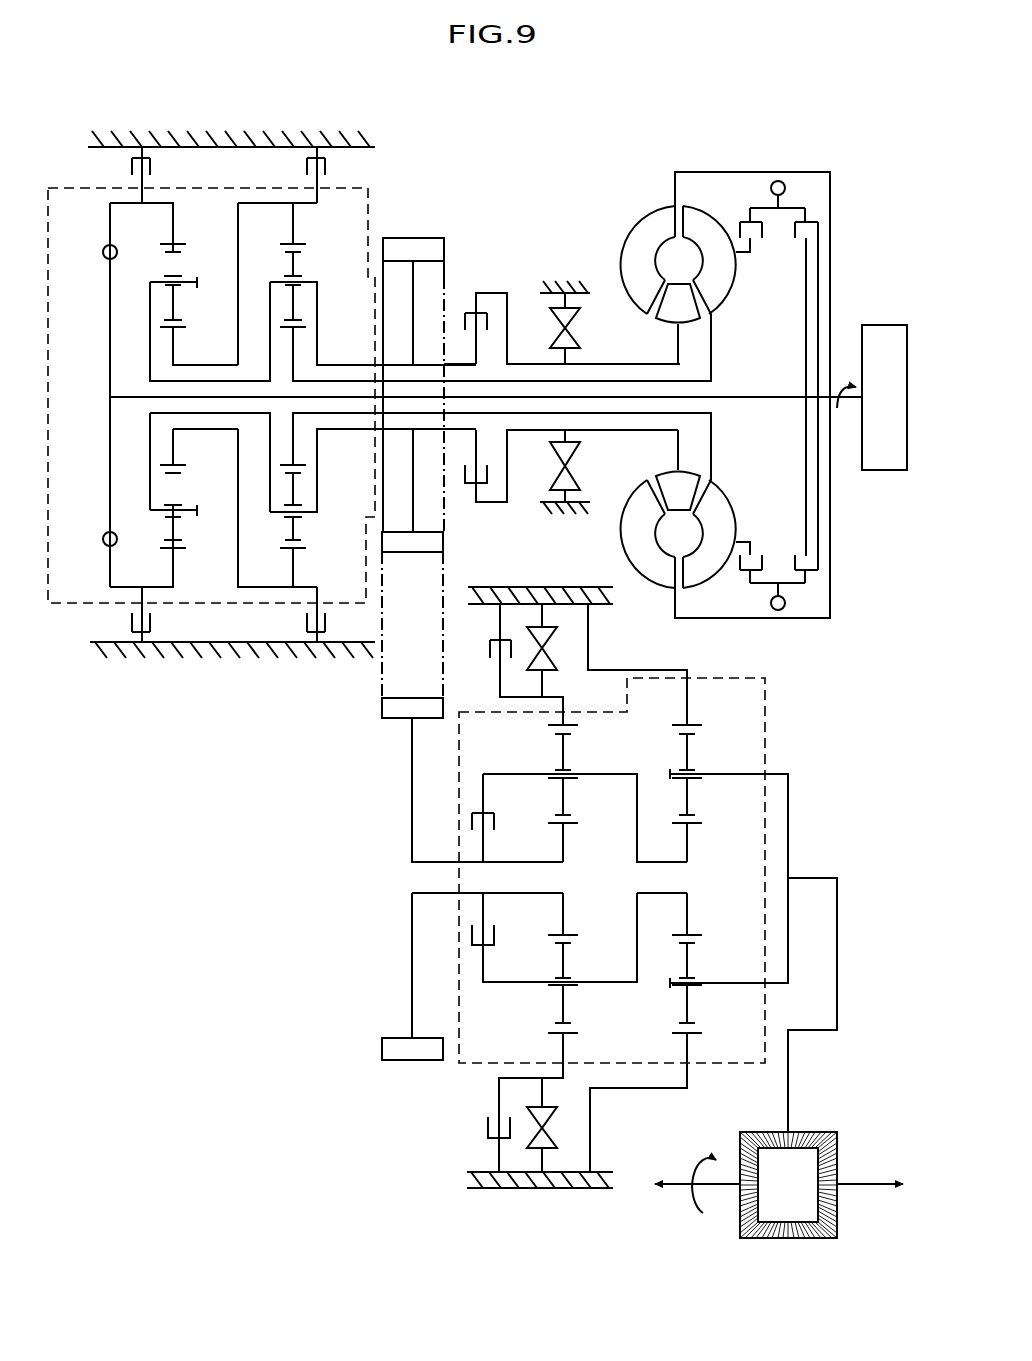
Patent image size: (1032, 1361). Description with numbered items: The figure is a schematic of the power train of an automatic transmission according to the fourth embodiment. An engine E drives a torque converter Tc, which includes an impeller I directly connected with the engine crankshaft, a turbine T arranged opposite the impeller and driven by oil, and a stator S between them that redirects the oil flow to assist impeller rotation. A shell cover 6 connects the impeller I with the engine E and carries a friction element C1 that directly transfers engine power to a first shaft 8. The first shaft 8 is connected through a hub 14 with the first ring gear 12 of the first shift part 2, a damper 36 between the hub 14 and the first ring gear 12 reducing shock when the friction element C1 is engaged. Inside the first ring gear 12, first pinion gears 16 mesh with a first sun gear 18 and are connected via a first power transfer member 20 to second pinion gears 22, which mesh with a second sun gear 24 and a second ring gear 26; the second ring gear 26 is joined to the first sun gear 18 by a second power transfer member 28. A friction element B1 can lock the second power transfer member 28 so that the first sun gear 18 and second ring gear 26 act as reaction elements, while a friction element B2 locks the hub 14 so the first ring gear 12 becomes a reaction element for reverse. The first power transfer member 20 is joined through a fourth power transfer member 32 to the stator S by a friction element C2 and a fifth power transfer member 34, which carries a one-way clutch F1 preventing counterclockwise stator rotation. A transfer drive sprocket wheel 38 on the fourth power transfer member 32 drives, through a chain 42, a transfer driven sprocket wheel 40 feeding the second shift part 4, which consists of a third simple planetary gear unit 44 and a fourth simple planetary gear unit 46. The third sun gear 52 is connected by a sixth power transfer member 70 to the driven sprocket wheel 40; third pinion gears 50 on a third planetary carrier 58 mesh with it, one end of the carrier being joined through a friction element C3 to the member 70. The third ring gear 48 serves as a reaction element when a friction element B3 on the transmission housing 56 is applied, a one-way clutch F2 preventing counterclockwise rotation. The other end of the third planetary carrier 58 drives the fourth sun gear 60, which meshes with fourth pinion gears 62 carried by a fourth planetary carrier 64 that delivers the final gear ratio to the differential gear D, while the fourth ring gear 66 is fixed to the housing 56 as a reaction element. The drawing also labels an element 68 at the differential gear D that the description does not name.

The first shift part 2 is at (60, 188).
The second shift part 4 is at (778, 742).
The shell cover 6 is at (760, 172).
The first shaft 8 is at (767, 397).
The first ring gear 12 is at (165, 243).
The hub 14 is at (110, 327).
The first pinion gears 16 is at (180, 319).
The first sun gear 18 is at (176, 328).
The first power transfer member 20 is at (165, 381).
The second pinion gears 22 is at (300, 252).
The second sun gear 24 is at (295, 345).
The second ring gear 26 is at (291, 243).
The second power transfer member 28 is at (238, 228).
The fourth power transfer member 32 is at (319, 303).
The fifth power transfer member 34 is at (535, 364).
The damper 36 is at (103, 252).
The transfer drive sprocket wheel 38 is at (445, 246).
The transfer driven sprocket wheel 40 is at (385, 708).
The chain 42 is at (445, 523).
The third simple planetary gear unit 44 is at (577, 995).
The fourth simple planetary gear unit 46 is at (700, 1015).
The third ring gear 48 is at (556, 736).
The third pinion gears 50 is at (576, 762).
The third sun gear 52 is at (572, 826).
The transmission housing 56 is at (237, 147).
The third planetary carrier 58 is at (637, 797).
The fourth sun gear 60 is at (690, 826).
The fourth pinion gears 62 is at (690, 800).
The fourth planetary carrier 64 is at (838, 958).
The fourth ring gear 66 is at (690, 725).
The drive axle 68 is at (868, 1184).
The sixth power transfer member 70 is at (412, 797).
The second friction element B1 is at (336, 394).
The third friction element B2 is at (161, 394).
The sixth friction element B3 is at (511, 664).
The first friction element C1 is at (777, 395).
The fourth friction element C2 is at (562, 390).
The fifth friction element C3 is at (500, 877).
The first one-way clutch F1 is at (576, 397).
The second one-way clutch F2 is at (564, 650).
The torque converter Tc is at (691, 365).
The impeller I is at (637, 240).
The turbine T is at (732, 288).
The stator S is at (657, 330).
The engine E is at (872, 397).
The differential gear D is at (843, 1122).